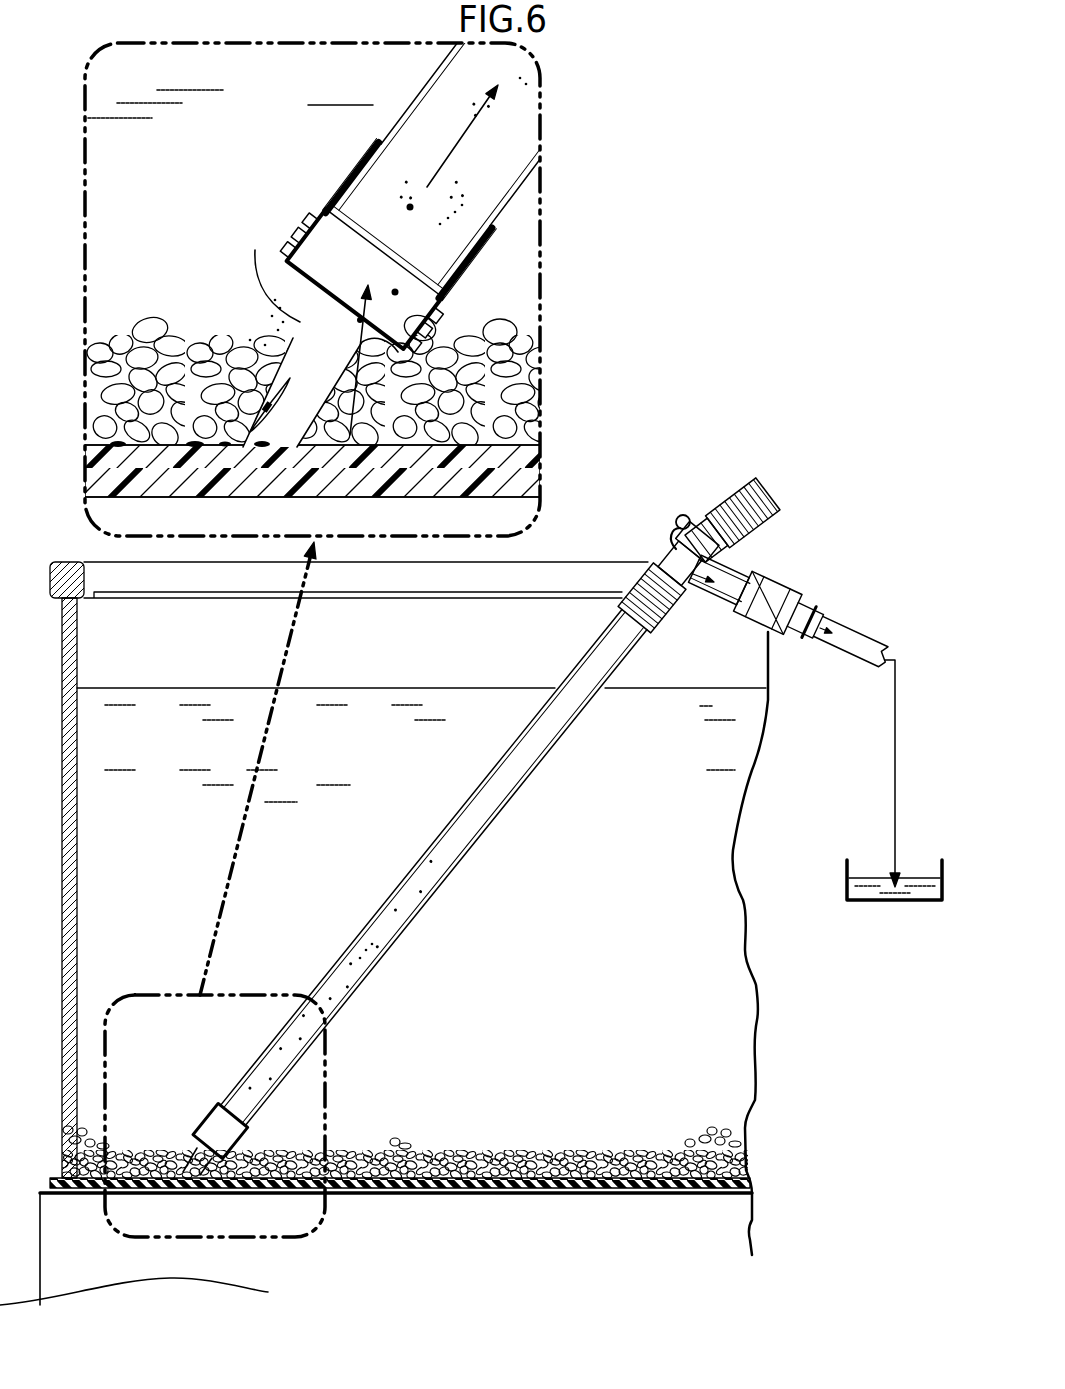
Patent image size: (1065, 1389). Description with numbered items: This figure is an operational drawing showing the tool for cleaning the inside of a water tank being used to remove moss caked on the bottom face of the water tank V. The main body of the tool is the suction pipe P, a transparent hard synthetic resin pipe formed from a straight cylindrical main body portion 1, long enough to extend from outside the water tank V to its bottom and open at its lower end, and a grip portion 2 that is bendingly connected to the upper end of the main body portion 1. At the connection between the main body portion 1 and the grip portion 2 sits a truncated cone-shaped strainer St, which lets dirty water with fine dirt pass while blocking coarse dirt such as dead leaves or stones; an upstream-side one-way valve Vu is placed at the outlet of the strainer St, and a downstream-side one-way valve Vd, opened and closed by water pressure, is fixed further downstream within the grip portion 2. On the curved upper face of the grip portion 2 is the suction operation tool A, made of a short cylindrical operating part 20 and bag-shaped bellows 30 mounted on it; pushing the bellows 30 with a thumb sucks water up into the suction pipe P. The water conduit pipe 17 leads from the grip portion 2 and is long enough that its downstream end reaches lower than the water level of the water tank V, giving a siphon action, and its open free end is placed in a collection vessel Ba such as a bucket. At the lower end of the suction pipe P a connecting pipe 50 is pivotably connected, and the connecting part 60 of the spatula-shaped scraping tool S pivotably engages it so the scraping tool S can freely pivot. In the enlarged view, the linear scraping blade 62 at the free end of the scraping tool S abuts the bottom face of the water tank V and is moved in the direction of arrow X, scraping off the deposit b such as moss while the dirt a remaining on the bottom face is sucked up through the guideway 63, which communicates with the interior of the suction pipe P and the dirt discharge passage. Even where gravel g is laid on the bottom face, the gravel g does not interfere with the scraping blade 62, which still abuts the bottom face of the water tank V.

The main body portion 1 is at (470, 853).
The connecting part 60 is at (344, 172).
The connecting pipe 50 is at (293, 234).
The dirt a is at (449, 213).
The deposit b is at (409, 205).
The scraping tool S is at (276, 342).
The gravel g is at (586, 1148).
The water tank V is at (59, 703).
The arrow X is at (245, 410).
The scraping blade 62 is at (262, 420).
The guideway 63 is at (313, 372).
The bellows 30 is at (722, 503).
The suction operation tool A is at (778, 520).
The upstream-side one-way valve Vu is at (671, 556).
The operating part 20 is at (737, 562).
The downstream-side one-way valve Vd is at (780, 596).
The water conduit pipe 17 is at (858, 636).
The suction pipe P is at (681, 633).
The grip portion 2 is at (746, 632).
The strainer St is at (632, 628).
The collection vessel Ba is at (846, 870).